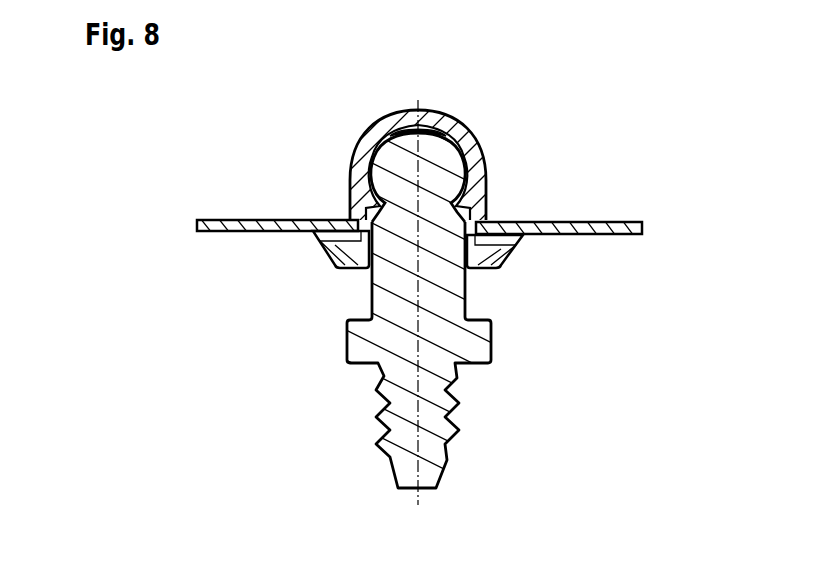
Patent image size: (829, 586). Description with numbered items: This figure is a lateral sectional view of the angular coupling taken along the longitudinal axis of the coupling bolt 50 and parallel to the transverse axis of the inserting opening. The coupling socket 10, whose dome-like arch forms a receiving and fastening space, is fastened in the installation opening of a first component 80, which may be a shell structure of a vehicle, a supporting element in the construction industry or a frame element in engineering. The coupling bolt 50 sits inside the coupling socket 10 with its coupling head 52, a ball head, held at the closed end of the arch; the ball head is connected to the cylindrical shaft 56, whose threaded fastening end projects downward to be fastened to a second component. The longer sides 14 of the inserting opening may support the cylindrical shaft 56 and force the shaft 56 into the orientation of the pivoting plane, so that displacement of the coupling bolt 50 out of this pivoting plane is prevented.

The coupling socket 10 is at (472, 167).
The longer side 14 is at (338, 255).
The coupling bolt 50 is at (455, 338).
The coupling head 52 is at (390, 160).
The cylindrical shaft 56 is at (455, 290).
The first component 80 is at (200, 221).